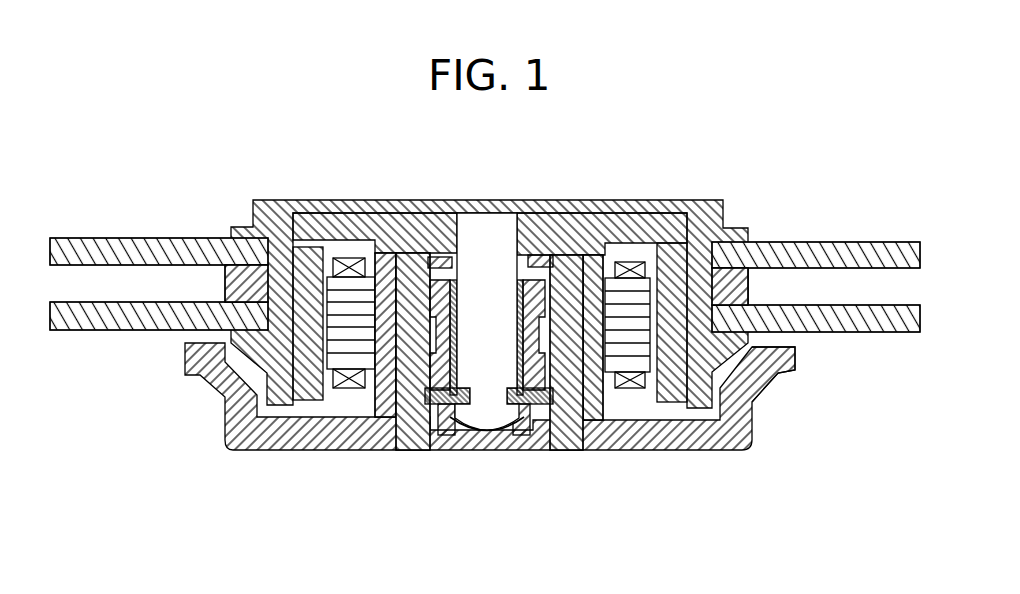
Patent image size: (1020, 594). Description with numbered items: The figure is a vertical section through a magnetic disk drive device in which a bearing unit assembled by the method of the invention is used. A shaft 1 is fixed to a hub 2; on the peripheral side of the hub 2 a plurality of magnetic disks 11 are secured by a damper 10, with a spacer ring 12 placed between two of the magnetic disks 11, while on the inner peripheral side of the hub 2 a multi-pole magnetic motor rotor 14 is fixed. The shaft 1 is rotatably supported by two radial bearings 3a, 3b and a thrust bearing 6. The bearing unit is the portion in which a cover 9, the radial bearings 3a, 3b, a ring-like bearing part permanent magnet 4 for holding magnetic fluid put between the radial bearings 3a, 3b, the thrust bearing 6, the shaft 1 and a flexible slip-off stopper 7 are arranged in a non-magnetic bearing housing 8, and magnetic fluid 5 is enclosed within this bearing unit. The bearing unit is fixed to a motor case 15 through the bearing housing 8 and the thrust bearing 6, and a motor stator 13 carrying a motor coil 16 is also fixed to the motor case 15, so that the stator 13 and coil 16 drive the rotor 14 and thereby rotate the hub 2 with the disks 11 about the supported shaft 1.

The shaft 1 is at (487, 237).
The hub 2 is at (385, 220).
The radial bearing 3a is at (540, 297).
The radial bearing 3b is at (572, 385).
The bearing part permanent magnet 4 is at (432, 335).
The magnetic fluid 5 is at (446, 318).
The thrust bearing 6 is at (500, 432).
The flexible slip-off stopper 7 is at (545, 399).
The bearing housing 8 is at (397, 303).
The cover 9 is at (438, 258).
The damper 10 is at (288, 203).
The magnetic disk 11 is at (177, 248).
The spacer ring 12 is at (236, 280).
The motor stator 13 is at (643, 343).
The motor rotor 14 is at (740, 369).
The motor case 15 is at (273, 443).
The motor coil 16 is at (633, 262).